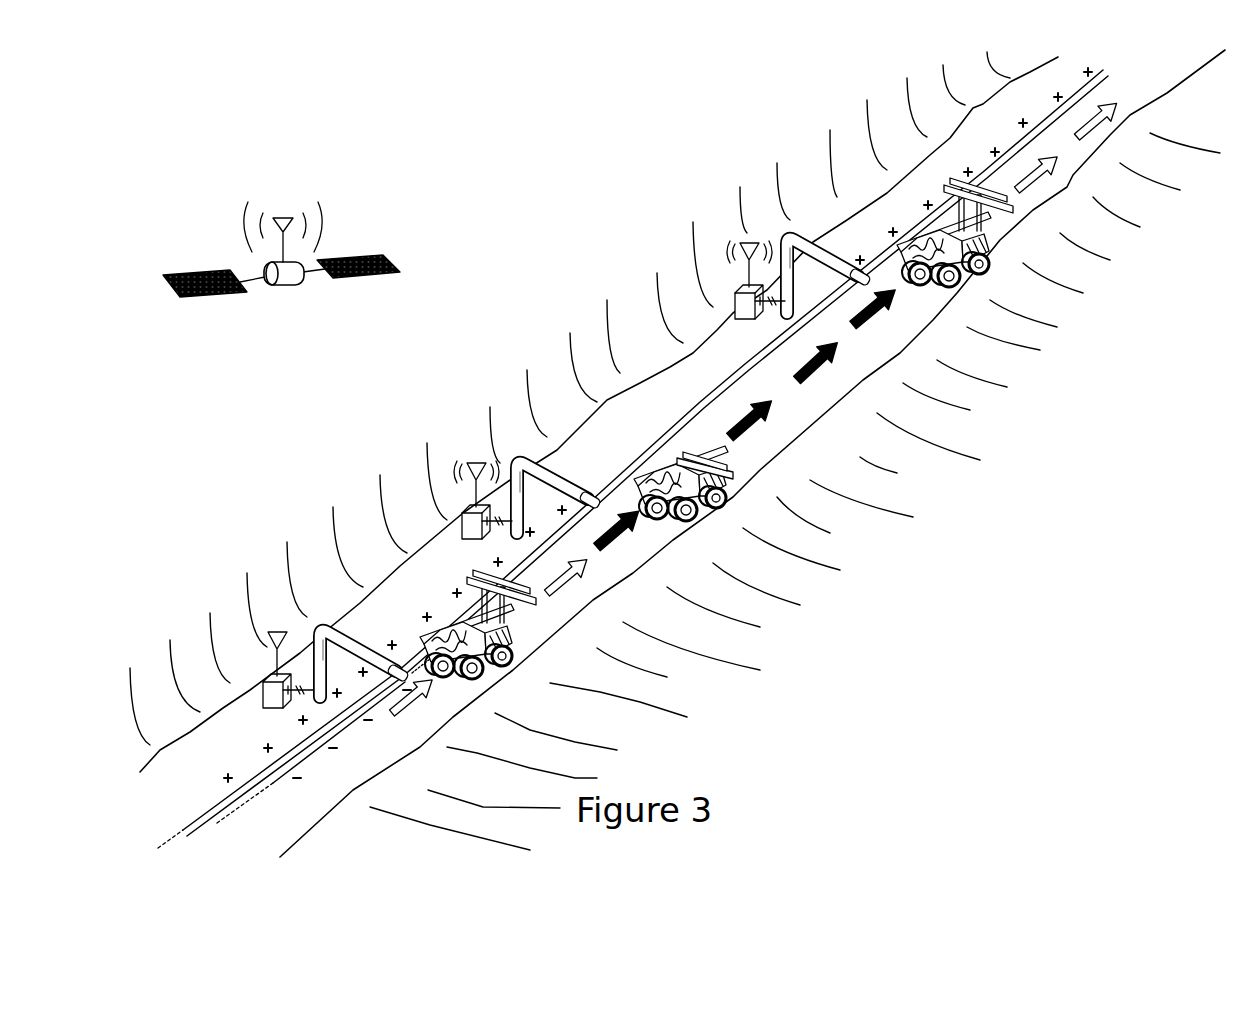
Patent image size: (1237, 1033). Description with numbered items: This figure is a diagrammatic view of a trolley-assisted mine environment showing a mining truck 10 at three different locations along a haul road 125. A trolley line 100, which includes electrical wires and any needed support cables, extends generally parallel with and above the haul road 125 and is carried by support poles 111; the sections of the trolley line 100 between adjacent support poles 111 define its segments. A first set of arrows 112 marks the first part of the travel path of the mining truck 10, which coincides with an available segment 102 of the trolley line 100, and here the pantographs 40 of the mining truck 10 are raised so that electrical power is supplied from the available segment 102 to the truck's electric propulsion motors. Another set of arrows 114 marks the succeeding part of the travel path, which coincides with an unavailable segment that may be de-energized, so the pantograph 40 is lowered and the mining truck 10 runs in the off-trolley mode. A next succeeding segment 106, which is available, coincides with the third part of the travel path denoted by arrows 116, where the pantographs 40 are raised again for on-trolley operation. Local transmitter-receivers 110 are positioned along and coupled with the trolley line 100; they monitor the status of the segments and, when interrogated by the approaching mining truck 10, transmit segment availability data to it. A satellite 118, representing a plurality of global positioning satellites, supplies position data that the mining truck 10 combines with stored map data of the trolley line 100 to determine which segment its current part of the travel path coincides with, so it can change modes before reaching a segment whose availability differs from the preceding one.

The mining truck 10 is at (512, 669).
The pantograph 40 is at (535, 598).
The trolley line 100 is at (168, 826).
The available segment 102 is at (436, 595).
The next succeeding segment 106 is at (977, 158).
The transmitter-receiver 110 is at (273, 708).
The support pole 111 is at (321, 626).
The first set of arrows 112 is at (412, 697).
The arrows 114 is at (622, 537).
The arrows 116 is at (1029, 182).
The satellite 118 is at (179, 296).
The haul road 125 is at (347, 783).